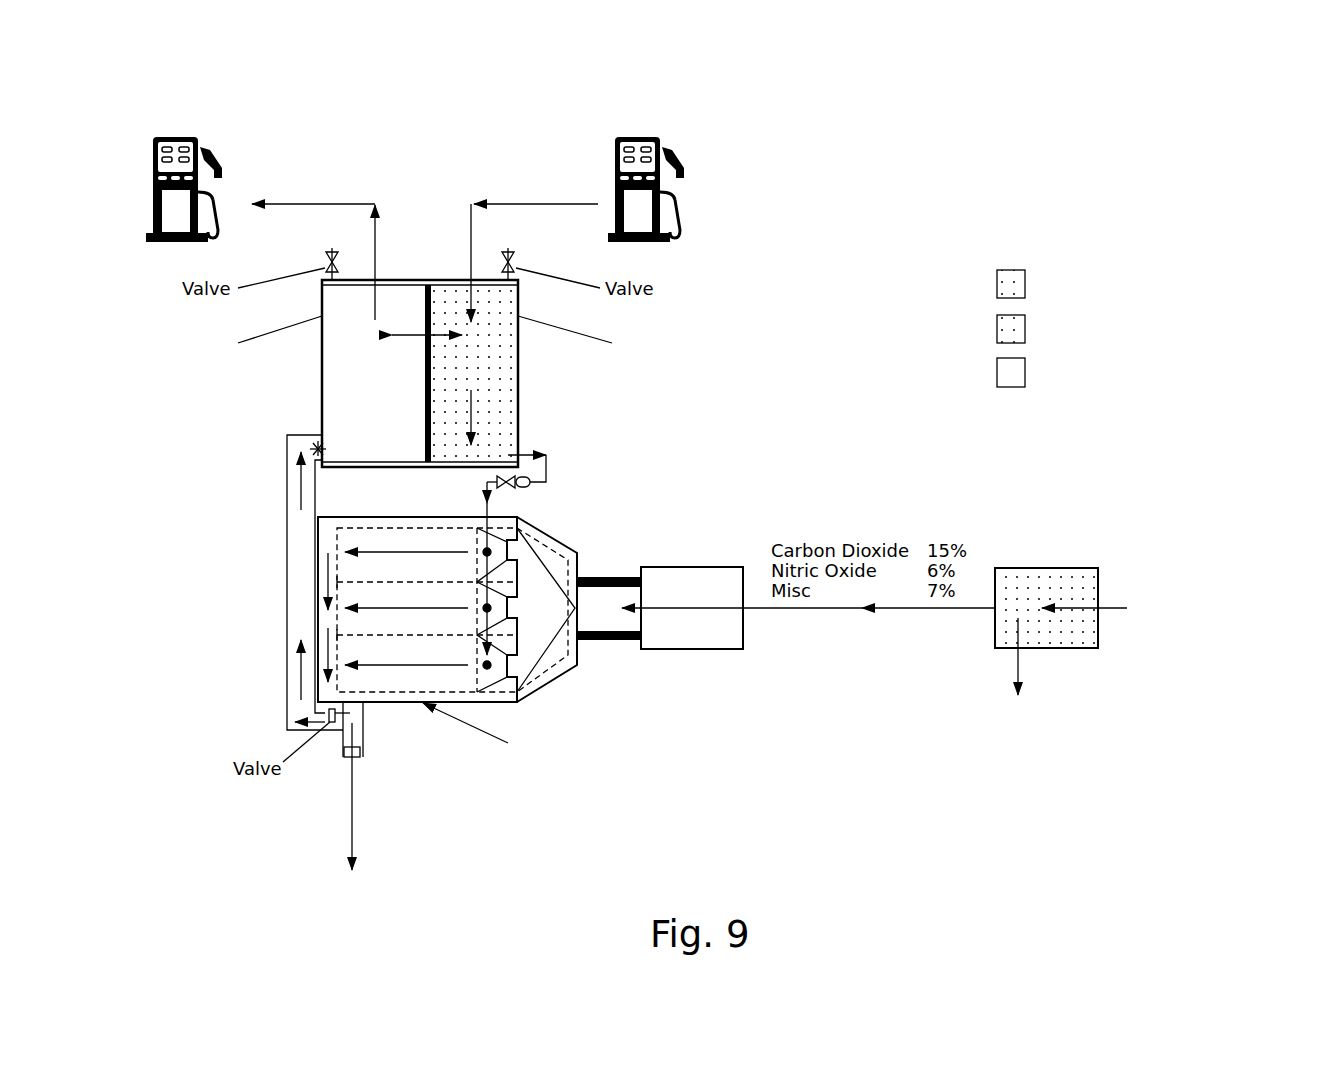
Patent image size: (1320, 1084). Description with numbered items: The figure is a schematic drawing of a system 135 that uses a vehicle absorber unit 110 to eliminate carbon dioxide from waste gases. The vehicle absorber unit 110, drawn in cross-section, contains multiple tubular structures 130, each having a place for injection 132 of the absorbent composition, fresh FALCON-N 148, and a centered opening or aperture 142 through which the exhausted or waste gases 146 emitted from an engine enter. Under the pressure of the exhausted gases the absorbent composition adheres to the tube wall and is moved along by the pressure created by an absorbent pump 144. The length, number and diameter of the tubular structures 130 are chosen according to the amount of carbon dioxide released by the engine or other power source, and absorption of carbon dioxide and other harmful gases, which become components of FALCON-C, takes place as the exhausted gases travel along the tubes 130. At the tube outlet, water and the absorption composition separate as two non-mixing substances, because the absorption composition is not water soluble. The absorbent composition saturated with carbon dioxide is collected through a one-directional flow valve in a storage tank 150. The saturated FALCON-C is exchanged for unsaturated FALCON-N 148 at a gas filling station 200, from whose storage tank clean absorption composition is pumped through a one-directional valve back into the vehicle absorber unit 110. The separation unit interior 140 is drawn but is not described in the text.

The gas filling station 200 is at (198, 140).
The system 135 is at (962, 180).
The storage tank 150 is at (343, 357).
The absorbent composition (FRESH FALCON-N) 148 is at (478, 357).
The exhausted or waste gases 146 is at (1060, 583).
The absorbent pump 144 is at (530, 485).
The place for injection 132 is at (497, 487).
The separation unit interior / filter stages 140 is at (412, 582).
The vehicle absorber unit 110 is at (464, 693).
The centered opening or aperture 142 is at (643, 610).
The tubular structures 130 is at (1027, 567).